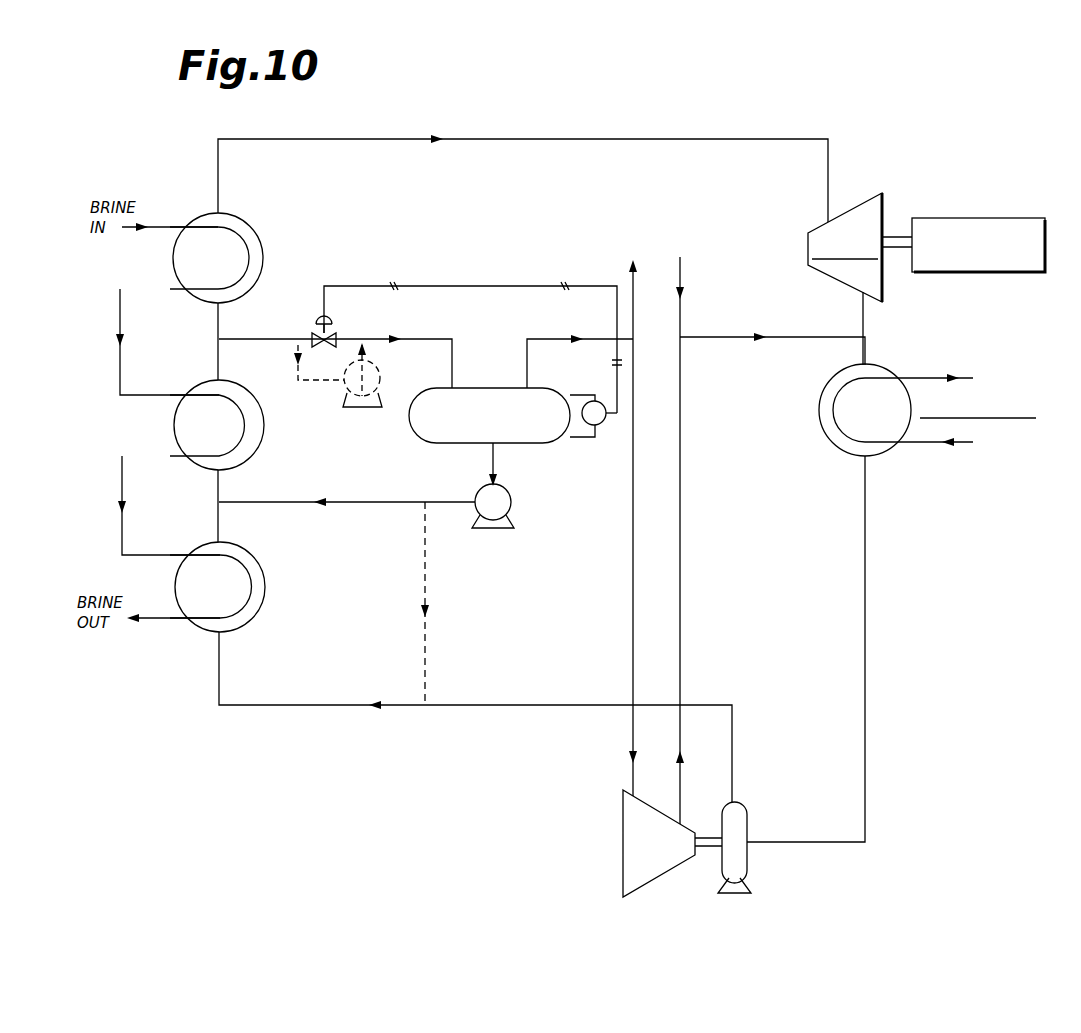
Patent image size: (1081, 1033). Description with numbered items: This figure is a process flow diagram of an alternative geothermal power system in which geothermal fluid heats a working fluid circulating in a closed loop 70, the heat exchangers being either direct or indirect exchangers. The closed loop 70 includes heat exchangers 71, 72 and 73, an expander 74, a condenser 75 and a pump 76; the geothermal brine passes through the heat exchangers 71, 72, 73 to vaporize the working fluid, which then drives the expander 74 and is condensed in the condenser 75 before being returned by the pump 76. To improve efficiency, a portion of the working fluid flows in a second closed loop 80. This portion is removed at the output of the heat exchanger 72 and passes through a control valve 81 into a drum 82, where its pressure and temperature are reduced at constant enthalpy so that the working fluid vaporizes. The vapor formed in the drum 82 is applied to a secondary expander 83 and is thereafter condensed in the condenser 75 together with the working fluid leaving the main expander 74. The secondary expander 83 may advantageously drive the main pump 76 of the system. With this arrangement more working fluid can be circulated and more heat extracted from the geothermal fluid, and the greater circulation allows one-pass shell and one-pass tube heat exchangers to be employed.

The closed loop 70 is at (512, 262).
The heat exchanger 71 is at (266, 594).
The heat exchanger 72 is at (265, 440).
The heat exchanger 73 is at (264, 258).
The expander 74 is at (853, 204).
The condenser 75 is at (818, 416).
The pump 76 is at (749, 815).
The second closed loop 80 is at (532, 602).
The control valve 81 is at (323, 350).
The drum 82 is at (547, 444).
The expander 83 is at (621, 800).